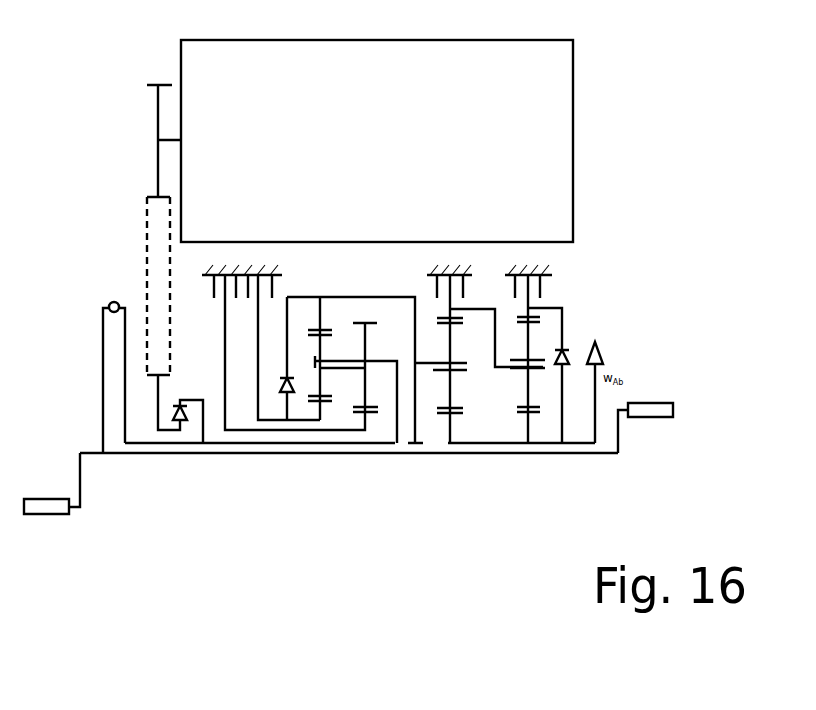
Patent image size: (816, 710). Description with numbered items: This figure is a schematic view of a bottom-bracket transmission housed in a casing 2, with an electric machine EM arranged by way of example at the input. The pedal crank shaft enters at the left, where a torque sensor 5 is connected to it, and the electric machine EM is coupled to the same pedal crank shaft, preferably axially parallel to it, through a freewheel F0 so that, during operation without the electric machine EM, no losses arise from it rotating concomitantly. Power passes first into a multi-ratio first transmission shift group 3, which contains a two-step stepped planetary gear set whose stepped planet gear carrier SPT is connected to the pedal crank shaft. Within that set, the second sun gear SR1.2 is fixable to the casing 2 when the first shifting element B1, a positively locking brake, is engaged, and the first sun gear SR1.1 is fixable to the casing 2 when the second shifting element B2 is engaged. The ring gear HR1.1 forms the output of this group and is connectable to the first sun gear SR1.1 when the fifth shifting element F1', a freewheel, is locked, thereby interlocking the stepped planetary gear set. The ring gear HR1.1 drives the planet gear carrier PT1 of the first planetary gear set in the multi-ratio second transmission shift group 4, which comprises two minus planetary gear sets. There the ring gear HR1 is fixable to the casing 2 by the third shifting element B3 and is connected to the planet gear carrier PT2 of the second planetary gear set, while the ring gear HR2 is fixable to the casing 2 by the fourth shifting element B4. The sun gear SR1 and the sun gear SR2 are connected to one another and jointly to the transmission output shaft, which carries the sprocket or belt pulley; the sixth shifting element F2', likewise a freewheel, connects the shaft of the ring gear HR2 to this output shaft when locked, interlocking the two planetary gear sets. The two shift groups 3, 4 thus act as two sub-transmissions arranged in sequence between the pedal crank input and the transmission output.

The bottom-bracket casing 2 is at (199, 262).
The first transmission shift group 3 is at (290, 450).
The second transmission shift group 4 is at (495, 457).
The torque sensor 5 is at (112, 300).
The electric machine EM is at (377, 141).
The first shifting element B1 is at (221, 272).
The second shifting element B2 is at (261, 272).
The third shifting element B3 is at (449, 272).
The fourth shifting element B4 is at (528, 272).
The freewheel F0 is at (179, 400).
The fifth shifting element F1' is at (280, 375).
The sixth shifting element F2' is at (572, 351).
The ring gear HR1.1 is at (315, 327).
The first sun gear SR1.1 is at (313, 403).
The second sun gear SR1.2 is at (376, 415).
The stepped planet gear carrier SPT is at (382, 370).
The ring gear HR1 is at (442, 317).
The planet gear carrier PT1 is at (422, 366).
The sun gear SR1 is at (458, 415).
The ring gear HR2 is at (535, 311).
The planet gear carrier PT2 is at (503, 362).
The sun gear SR2 is at (540, 414).